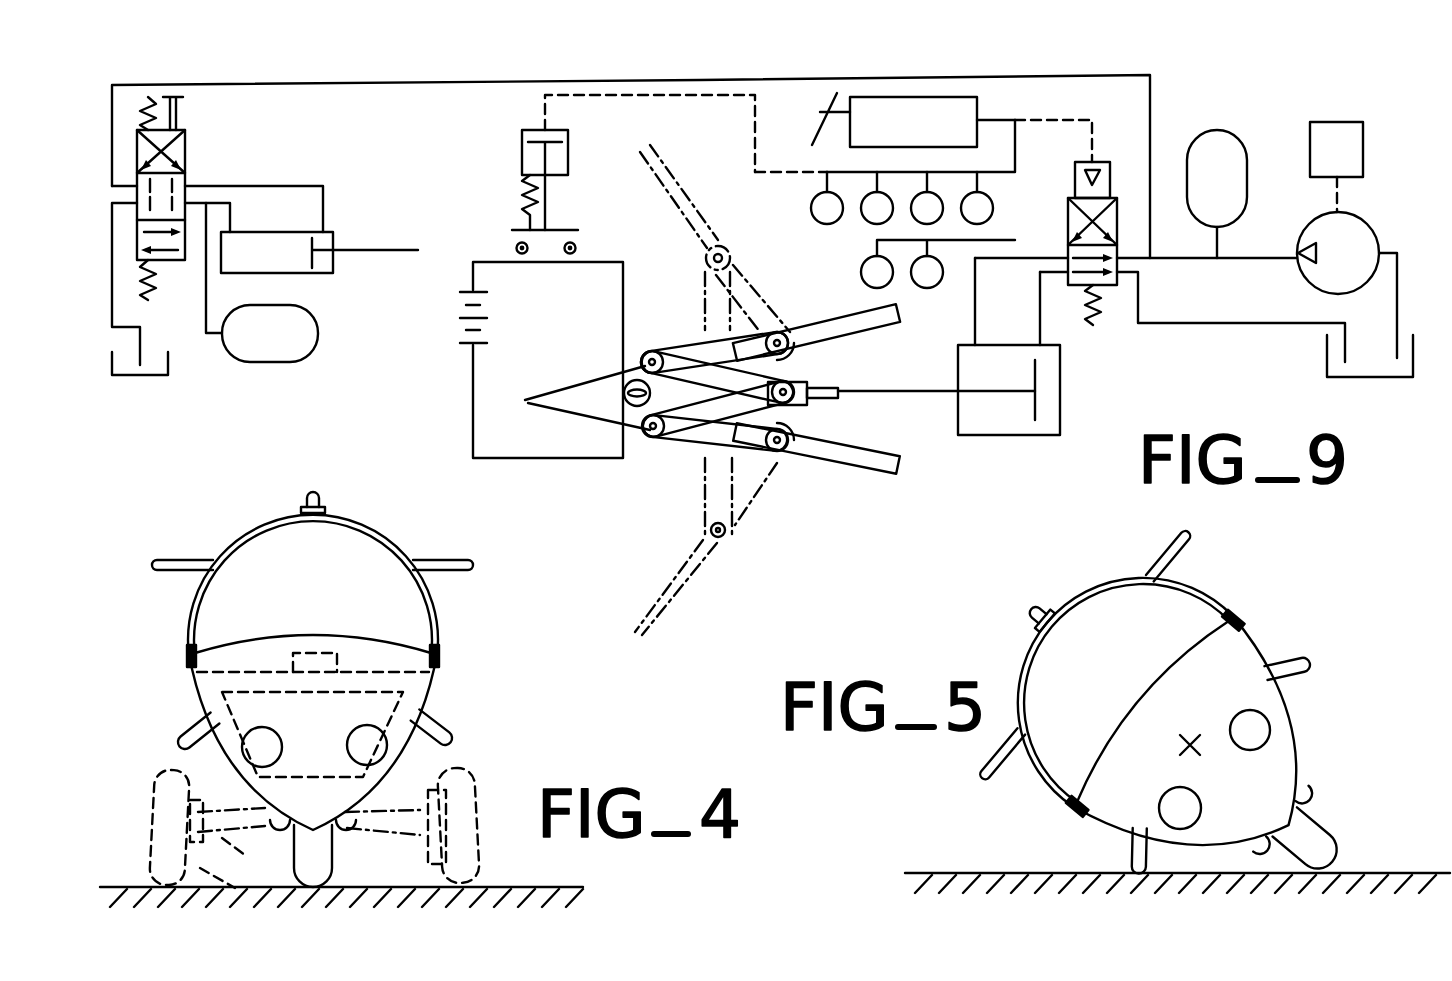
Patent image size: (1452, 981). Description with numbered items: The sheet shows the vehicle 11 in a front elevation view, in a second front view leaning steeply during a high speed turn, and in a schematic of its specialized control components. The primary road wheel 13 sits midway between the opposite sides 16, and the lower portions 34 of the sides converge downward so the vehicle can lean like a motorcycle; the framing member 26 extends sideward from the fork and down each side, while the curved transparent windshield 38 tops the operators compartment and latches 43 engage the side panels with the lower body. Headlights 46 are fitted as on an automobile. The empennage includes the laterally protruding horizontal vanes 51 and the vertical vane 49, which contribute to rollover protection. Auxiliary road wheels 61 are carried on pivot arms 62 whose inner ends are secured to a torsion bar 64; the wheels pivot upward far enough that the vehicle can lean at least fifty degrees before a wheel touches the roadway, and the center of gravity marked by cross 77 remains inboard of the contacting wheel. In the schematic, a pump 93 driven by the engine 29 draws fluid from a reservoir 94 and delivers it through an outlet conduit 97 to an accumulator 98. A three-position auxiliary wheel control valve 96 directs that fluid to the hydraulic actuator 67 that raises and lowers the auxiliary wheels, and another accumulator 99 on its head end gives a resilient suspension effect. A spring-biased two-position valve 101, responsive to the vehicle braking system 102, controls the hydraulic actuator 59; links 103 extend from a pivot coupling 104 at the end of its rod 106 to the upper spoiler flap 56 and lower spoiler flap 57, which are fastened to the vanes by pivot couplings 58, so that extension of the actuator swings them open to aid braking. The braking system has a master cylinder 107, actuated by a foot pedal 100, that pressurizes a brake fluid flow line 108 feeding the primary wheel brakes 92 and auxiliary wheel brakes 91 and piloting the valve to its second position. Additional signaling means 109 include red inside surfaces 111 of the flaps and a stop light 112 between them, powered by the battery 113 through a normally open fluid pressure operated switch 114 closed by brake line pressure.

In FIG. 4, the vehicle 11 is at (478, 602).
In FIG. 5, the vehicle 11 is at (932, 606).
In FIG. 4, the front primary road wheel 13 is at (337, 855).
In FIG. 5, the front primary road wheel 13 is at (1340, 838).
In FIG. 4, the opposite sides 16 is at (188, 628).
In FIG. 5, the opposite sides 16 is at (1242, 638).
In FIG. 4, the framing member 26 is at (282, 676).
In FIG. 9, the vehicle engine 29 is at (1346, 124).
In FIG. 4, the lower portions 34 is at (244, 790).
In FIG. 5, the lower portions 34 is at (1302, 748).
In FIG. 4, the curved transparent windshield 38 is at (260, 599).
In FIG. 5, the curved transparent windshield 38 is at (1100, 667).
In FIG. 4, the latches 43 is at (437, 660).
In FIG. 5, the latches 43 is at (1145, 705).
In FIG. 4, the headlights 46 is at (276, 735).
In FIG. 4, the vertical vane 49 is at (303, 496).
In FIG. 5, the vertical vane 49 is at (1030, 600).
In FIG. 4, the horizontal vane 51 is at (175, 560).
In FIG. 5, the horizontal vane 51 is at (1178, 543).
In FIG. 9, the upper spoiler flap 56 is at (695, 335).
In FIG. 9, the lower spoiler flap 57 is at (592, 432).
In FIG. 9, the pivot couplings 58 is at (798, 332).
In FIG. 9, the hydraulic actuator 59 is at (1062, 400).
In FIG. 4, the auxiliary road wheels 61 is at (445, 722).
In FIG. 5, the auxiliary road wheels 61 is at (1298, 652).
In FIG. 4, the pivot arms 62 is at (238, 835).
In FIG. 4, the torsion bar 64 is at (350, 828).
In FIG. 9, the hydraulic actuator 67 is at (297, 232).
In FIG. 5, the cross 77 is at (1190, 724).
In FIG. 9, the brakes 91 is at (800, 207).
In FIG. 4, the brakes 91 is at (238, 888).
In FIG. 9, the brakes 92 is at (850, 265).
In FIG. 9, the pump 93 is at (1370, 230).
In FIG. 9, the reservoir 94 is at (1362, 378).
In FIG. 9, the auxiliary wheel control valve 96 is at (205, 152).
In FIG. 9, the pressurized fluid outlet conduit 97 is at (1252, 262).
In FIG. 9, the accumulator 98 is at (1237, 134).
In FIG. 9, the accumulator 99 is at (255, 345).
In FIG. 9, the foot pedal 100 is at (818, 122).
In FIG. 9, the two position valve 101 is at (1106, 340).
In FIG. 9, the vehicle braking system 102 is at (1020, 108).
In FIG. 9, the links 103 is at (792, 368).
In FIG. 9, the pivot coupling 104 is at (832, 383).
In FIG. 9, the rod 106 is at (912, 395).
In FIG. 9, the master cylinder 107 is at (896, 133).
In FIG. 9, the brake fluid flow line 108 is at (1018, 155).
In FIG. 9, the means for visually signaling braking 109 is at (452, 390).
In FIG. 9, the inside surfaces 111 is at (600, 382).
In FIG. 9, the stop light 112 is at (670, 440).
In FIG. 9, the vehicle battery 113 is at (458, 318).
In FIG. 9, the fluid pressure operated switch 114 is at (505, 157).